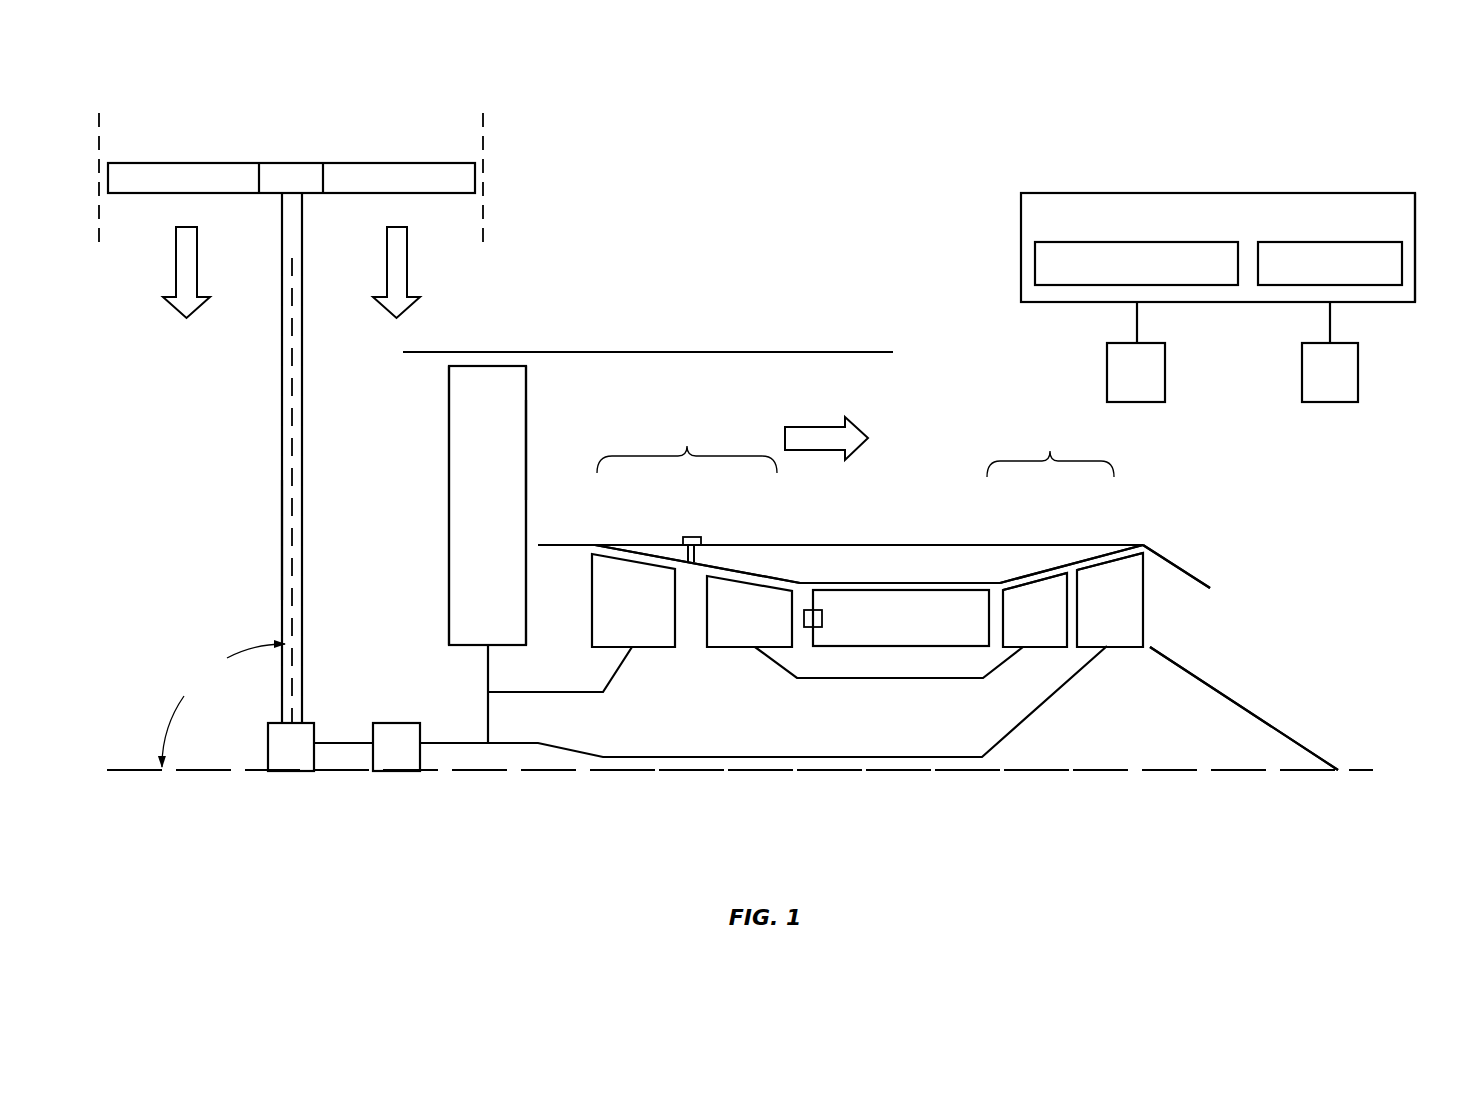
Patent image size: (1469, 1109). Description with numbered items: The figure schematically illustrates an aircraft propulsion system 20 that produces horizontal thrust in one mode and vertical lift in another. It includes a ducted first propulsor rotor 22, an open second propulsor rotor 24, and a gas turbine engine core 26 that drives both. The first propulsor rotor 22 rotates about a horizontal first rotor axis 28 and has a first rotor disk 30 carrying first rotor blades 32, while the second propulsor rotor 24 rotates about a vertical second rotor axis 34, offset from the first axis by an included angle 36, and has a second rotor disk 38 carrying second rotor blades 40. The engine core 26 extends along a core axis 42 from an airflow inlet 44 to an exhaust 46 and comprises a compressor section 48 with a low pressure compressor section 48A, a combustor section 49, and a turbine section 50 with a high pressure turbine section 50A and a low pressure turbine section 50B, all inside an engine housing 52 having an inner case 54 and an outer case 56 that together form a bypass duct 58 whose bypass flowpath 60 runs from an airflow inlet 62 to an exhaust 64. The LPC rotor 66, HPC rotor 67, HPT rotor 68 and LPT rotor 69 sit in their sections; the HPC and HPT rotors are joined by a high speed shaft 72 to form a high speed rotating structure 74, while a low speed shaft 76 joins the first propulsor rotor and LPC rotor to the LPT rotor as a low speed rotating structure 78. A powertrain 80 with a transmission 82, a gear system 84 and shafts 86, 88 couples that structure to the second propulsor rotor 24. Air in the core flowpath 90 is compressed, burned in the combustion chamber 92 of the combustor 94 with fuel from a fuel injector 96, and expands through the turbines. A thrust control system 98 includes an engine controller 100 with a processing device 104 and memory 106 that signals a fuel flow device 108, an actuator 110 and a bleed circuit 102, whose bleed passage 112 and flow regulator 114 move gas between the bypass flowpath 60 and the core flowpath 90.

The propulsion system 20 is at (966, 174).
The first propulsor rotor 22 is at (437, 620).
The second propulsor rotor 24 is at (435, 156).
The gas turbine engine core 26 is at (1173, 497).
The first rotor axis 28 is at (1360, 771).
The core axis 42 is at (1262, 752).
The first rotor disk 30 is at (488, 690).
The first rotor blades 32 is at (449, 490).
The second rotor axis 34 is at (290, 425).
The included angle 36 is at (223, 705).
The second rotor disk 38 is at (291, 163).
The second rotor blades 40 is at (185, 163).
The airflow inlet 44 is at (537, 580).
The exhaust 46 is at (1219, 584).
The compressor section 48 is at (697, 500).
The low pressure compressor section 48A is at (639, 554).
The combustor section 49 is at (926, 582).
The turbine section 50 is at (1065, 504).
The high pressure turbine section 50A is at (1033, 577).
The low pressure turbine section 50B is at (1105, 564).
The engine housing 52 is at (821, 309).
The inner case 54 is at (869, 544).
The outer case 56 is at (662, 352).
The bypass duct 58 is at (886, 339).
The bypass flowpath 60 is at (590, 382).
The airflow inlet 62 is at (547, 405).
The exhaust 64 is at (883, 417).
The LPC rotor 66 is at (648, 647).
The HPC rotor 67 is at (730, 647).
The HPT rotor 68 is at (1035, 647).
The LPT rotor 69 is at (1125, 647).
The high speed shaft 72 is at (958, 679).
The high speed rotating structure 74 is at (857, 689).
The low speed shaft 76 is at (858, 758).
The low speed rotating structure 78 is at (955, 771).
The powertrain 80 is at (385, 814).
The transmission 82 is at (396, 747).
The gear system 84 is at (291, 747).
The shaft 86 is at (340, 744).
The shaft 88 is at (282, 538).
The core flowpath 90 is at (562, 603).
The combustion chamber 92 is at (901, 618).
The combustor 94 is at (827, 584).
The fuel injector 96 is at (822, 618).
The thrust control system 98 is at (1351, 158).
The engine controller 100 is at (1415, 227).
The bleed circuit 102 is at (688, 537).
The processing device 104 is at (1203, 285).
The memory 106 is at (1380, 285).
The fuel flow device 108 is at (1136, 352).
The actuator 110 is at (1330, 352).
The bleed passage 112 is at (682, 555).
The flow regulator 114 is at (700, 540).